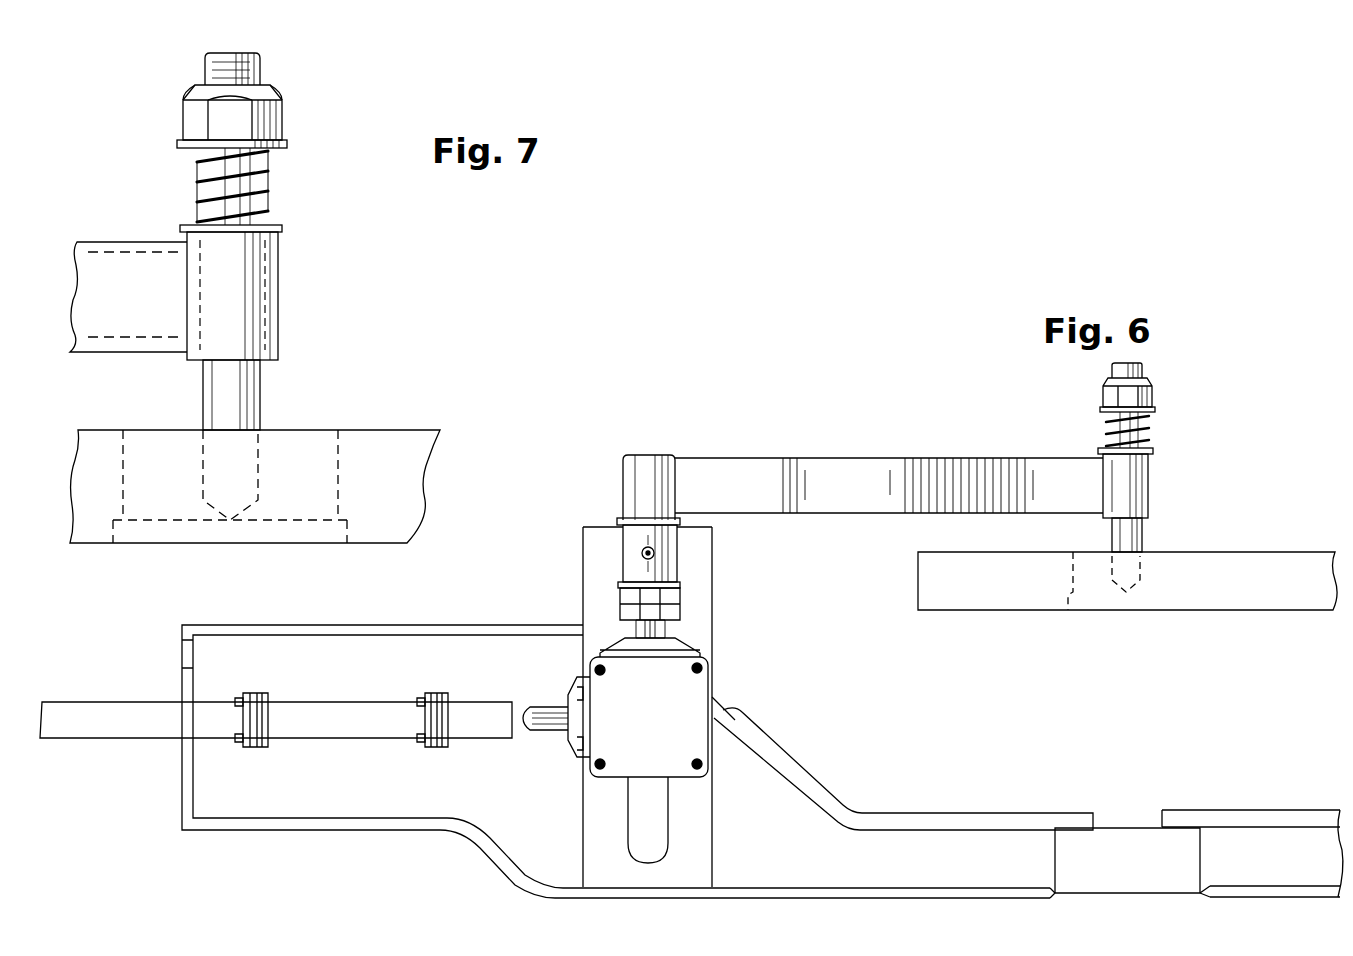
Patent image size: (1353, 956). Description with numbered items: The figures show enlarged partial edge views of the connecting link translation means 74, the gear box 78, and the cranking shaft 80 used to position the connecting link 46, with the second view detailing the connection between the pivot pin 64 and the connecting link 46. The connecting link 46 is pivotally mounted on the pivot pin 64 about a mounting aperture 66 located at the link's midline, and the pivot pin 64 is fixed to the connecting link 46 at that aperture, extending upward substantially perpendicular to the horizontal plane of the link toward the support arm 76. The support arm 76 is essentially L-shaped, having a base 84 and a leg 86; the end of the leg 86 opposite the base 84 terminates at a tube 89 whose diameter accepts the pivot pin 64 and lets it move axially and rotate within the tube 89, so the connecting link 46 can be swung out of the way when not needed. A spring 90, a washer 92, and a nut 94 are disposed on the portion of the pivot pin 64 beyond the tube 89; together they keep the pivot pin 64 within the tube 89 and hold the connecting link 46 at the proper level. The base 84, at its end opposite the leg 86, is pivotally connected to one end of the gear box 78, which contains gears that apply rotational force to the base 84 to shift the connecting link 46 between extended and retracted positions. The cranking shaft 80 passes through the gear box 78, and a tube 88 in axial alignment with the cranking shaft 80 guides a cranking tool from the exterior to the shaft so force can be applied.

In FIG. 7, the connecting link 46 is at (413, 430).
In FIG. 6, the connecting link 46 is at (1292, 612).
In FIG. 7, the pivot pin 64 is at (261, 395).
In FIG. 6, the pivot pin 64 is at (1143, 530).
In FIG. 7, the mounting aperture 66 is at (247, 505).
In FIG. 6, the mounting aperture 66 is at (1126, 592).
In FIG. 6, the connecting link translation means 74 is at (572, 511).
In FIG. 6, the support arm 76 is at (745, 455).
In FIG. 6, the gear box 78 is at (712, 656).
In FIG. 6, the cranking shaft 80 is at (542, 705).
In FIG. 6, the base 84 is at (620, 468).
In FIG. 7, the leg 86 is at (122, 242).
In FIG. 6, the leg 86 is at (1015, 458).
In FIG. 6, the tube 88 is at (130, 740).
In FIG. 7, the tube 89 is at (279, 292).
In FIG. 6, the tube 89 is at (1150, 478).
In FIG. 7, the spring 90 is at (271, 205).
In FIG. 6, the spring 90 is at (1152, 428).
In FIG. 7, the washer 92 is at (290, 145).
In FIG. 6, the washer 92 is at (1105, 410).
In FIG. 7, the nut 94 is at (283, 118).
In FIG. 6, the nut 94 is at (1155, 396).